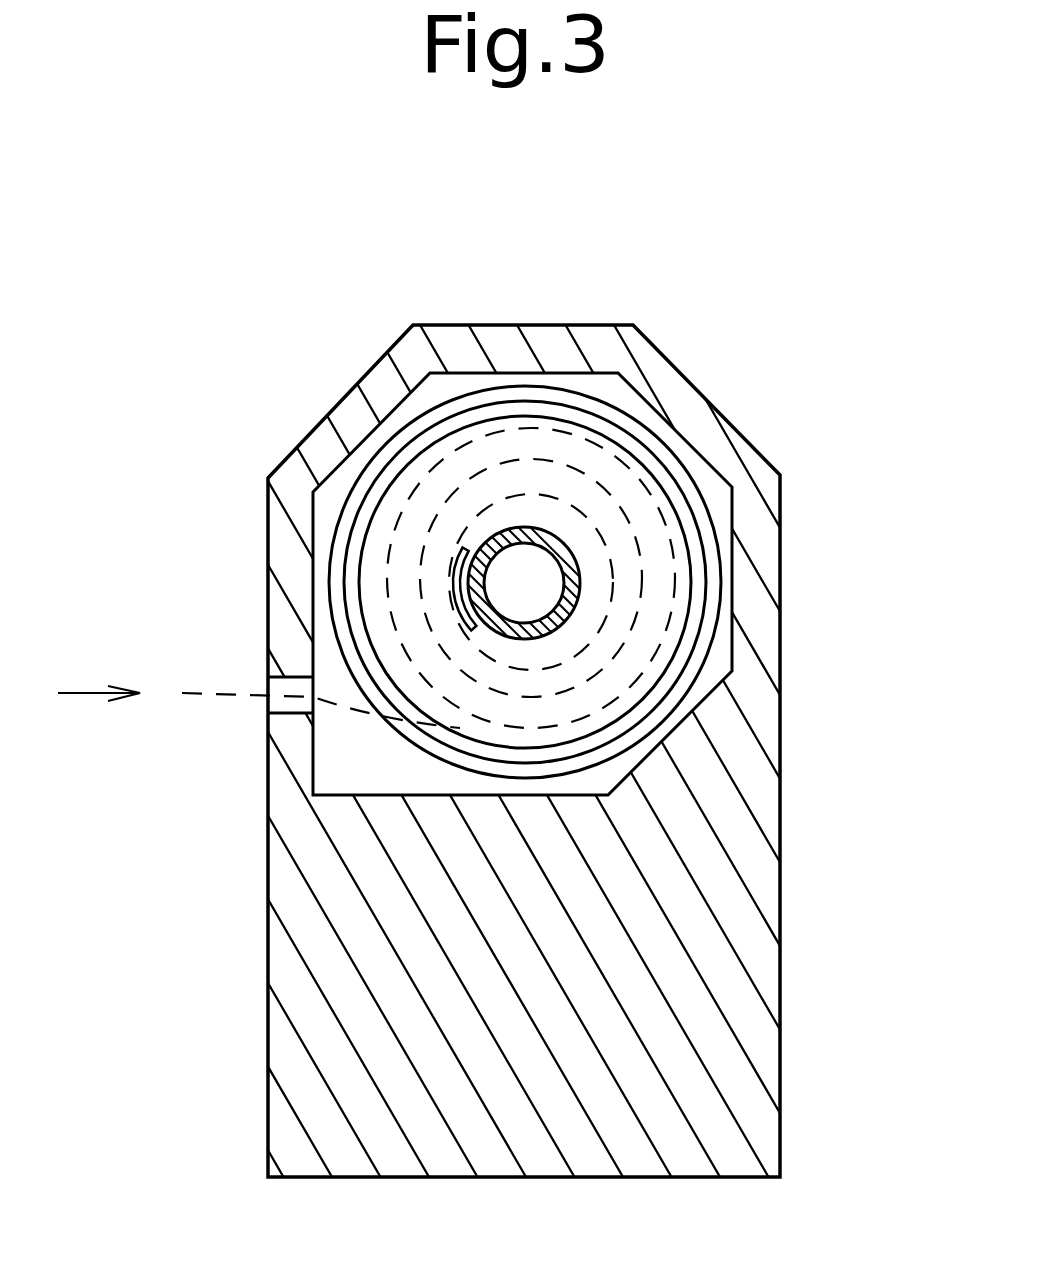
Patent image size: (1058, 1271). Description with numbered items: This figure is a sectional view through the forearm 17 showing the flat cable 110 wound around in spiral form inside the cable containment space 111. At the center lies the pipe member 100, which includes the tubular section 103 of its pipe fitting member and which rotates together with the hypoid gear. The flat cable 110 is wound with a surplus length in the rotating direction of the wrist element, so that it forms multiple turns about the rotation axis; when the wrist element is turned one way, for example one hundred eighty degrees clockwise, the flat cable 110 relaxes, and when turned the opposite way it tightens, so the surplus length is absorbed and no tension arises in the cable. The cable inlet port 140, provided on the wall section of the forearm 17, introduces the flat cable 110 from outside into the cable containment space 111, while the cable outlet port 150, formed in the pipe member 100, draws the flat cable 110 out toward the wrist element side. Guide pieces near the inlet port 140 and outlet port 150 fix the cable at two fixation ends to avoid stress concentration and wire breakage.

The forearm 17 is at (806, 658).
The pipe member 100 is at (560, 520).
The tubular section 103 is at (392, 495).
The flat cable 110 is at (233, 693).
The cable containment space 111 is at (370, 755).
The cable inlet port 140 is at (285, 713).
The cable outlet port 150 is at (474, 557).